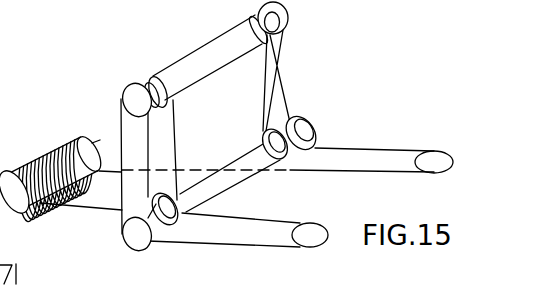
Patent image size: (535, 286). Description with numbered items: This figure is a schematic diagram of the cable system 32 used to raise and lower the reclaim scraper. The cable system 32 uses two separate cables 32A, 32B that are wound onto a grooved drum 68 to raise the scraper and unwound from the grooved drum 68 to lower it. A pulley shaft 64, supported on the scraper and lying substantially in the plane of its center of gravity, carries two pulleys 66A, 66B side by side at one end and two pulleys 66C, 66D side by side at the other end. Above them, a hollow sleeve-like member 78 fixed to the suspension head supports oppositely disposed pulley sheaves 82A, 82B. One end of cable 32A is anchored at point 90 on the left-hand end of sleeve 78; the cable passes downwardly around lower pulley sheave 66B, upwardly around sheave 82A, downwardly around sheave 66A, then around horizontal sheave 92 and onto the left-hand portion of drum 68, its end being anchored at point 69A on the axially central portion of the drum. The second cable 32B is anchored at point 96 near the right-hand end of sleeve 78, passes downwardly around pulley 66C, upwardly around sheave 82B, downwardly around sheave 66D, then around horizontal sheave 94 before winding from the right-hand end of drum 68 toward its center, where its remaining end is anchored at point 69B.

The cable system 32 is at (358, 90).
The cable 32A is at (176, 137).
The cable 32B is at (264, 72).
The pulley shaft 64 is at (226, 186).
The pulley 66A is at (138, 246).
The pulley 66B is at (175, 226).
The pulley 66C is at (290, 165).
The pulley 66D is at (317, 138).
The grooved drum 68 is at (66, 186).
The anchor point 69A is at (40, 203).
The anchor point 69B is at (92, 143).
The hollow sleeve-like member 78 is at (184, 60).
The pulley sheave 82A is at (124, 91).
The pulley sheave 82B is at (288, 22).
The anchor point 90 is at (153, 75).
The horizontal sheave 92 is at (310, 244).
The horizontal sheave 94 is at (445, 158).
The anchor point 96 is at (257, 38).